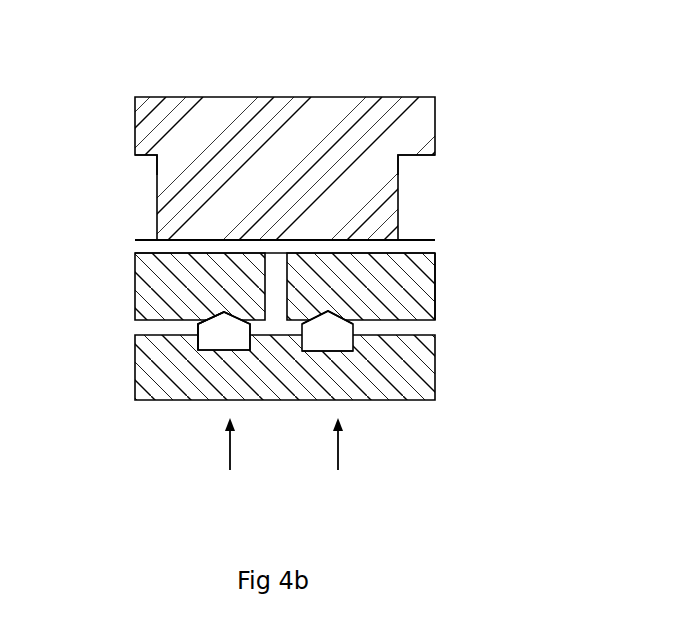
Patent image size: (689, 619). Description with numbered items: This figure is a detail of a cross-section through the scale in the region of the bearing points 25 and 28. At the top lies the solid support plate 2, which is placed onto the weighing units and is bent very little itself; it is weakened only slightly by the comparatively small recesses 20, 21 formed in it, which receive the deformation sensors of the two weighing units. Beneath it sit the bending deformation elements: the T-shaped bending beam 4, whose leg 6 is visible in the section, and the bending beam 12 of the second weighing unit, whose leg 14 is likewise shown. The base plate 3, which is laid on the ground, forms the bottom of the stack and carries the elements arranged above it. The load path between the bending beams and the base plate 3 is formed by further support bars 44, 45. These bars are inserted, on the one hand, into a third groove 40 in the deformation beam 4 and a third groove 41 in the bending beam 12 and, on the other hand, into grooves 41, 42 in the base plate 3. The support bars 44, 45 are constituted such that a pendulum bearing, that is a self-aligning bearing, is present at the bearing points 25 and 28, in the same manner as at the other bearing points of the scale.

The support plate 2 is at (298, 154).
The base plate 3 is at (437, 370).
The bending beam 4 is at (137, 273).
The leg 6 is at (178, 289).
The bending beam 12 is at (422, 280).
The leg 14 is at (371, 288).
The recess 20 is at (150, 160).
The recess 21 is at (404, 158).
The bearing point 25 is at (223, 468).
The bearing point 28 is at (333, 468).
The third groove 40 is at (220, 316).
The third groove 41 is at (342, 318).
The groove 42 is at (328, 352).
The support bar 44 is at (223, 332).
The support bar 45 is at (328, 338).